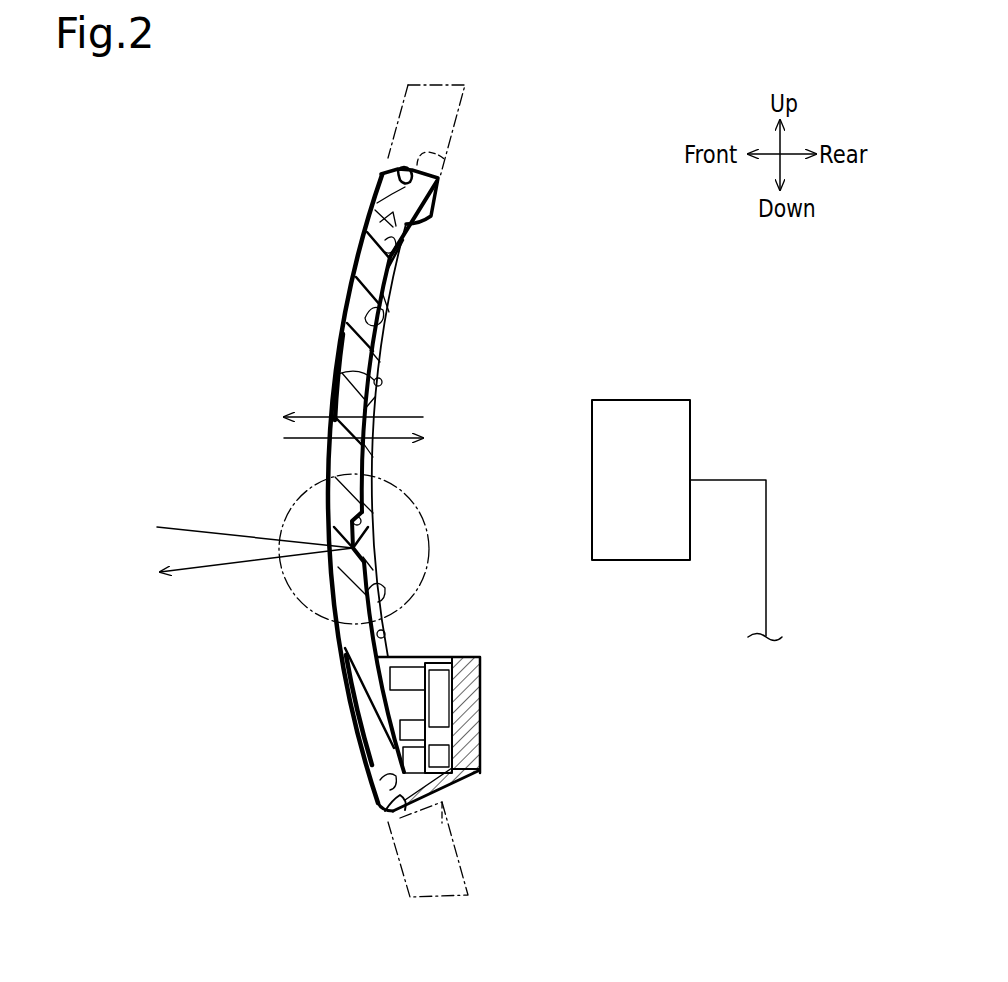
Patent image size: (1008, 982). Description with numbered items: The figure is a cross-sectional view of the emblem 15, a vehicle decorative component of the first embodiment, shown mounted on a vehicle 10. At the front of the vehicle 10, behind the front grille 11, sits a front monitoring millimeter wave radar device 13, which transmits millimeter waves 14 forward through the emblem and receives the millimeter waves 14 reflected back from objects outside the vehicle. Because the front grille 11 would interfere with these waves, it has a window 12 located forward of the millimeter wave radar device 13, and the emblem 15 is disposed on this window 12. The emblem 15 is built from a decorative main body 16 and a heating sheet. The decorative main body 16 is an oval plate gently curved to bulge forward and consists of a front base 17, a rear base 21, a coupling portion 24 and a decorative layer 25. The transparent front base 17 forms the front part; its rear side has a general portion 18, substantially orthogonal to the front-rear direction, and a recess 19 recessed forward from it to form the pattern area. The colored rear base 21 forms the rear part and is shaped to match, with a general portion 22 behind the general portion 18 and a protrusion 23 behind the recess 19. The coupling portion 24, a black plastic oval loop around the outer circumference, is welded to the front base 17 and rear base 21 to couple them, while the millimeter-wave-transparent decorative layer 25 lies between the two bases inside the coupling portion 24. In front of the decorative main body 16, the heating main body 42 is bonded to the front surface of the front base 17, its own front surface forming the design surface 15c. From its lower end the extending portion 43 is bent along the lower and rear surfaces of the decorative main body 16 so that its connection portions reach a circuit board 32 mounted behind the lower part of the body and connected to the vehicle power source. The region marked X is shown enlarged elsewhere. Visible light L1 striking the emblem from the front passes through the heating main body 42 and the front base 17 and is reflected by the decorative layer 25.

The vehicle 10 is at (642, 176).
The front grille 11 is at (403, 112).
The window 12 is at (393, 167).
The millimeter wave radar device 13 is at (638, 405).
The millimeter waves 14 is at (424, 438).
The emblem 15 is at (199, 251).
The design surface 15c is at (338, 343).
The decorative main body 16 is at (535, 228).
The front base 17 is at (356, 300).
The general portion 18 is at (338, 374).
The recess 19 is at (393, 217).
The rear base 21 is at (390, 279).
The general portion 22 is at (383, 317).
The protrusion 23 is at (376, 256).
The coupling portion 24 is at (420, 157).
The decorative layer 25 is at (376, 354).
The circuit board 32 is at (404, 670).
The heating main body 42 is at (346, 678).
The extending portion 43 is at (474, 768).
The enlarged region X is at (302, 492).
The visible light L1 is at (202, 569).